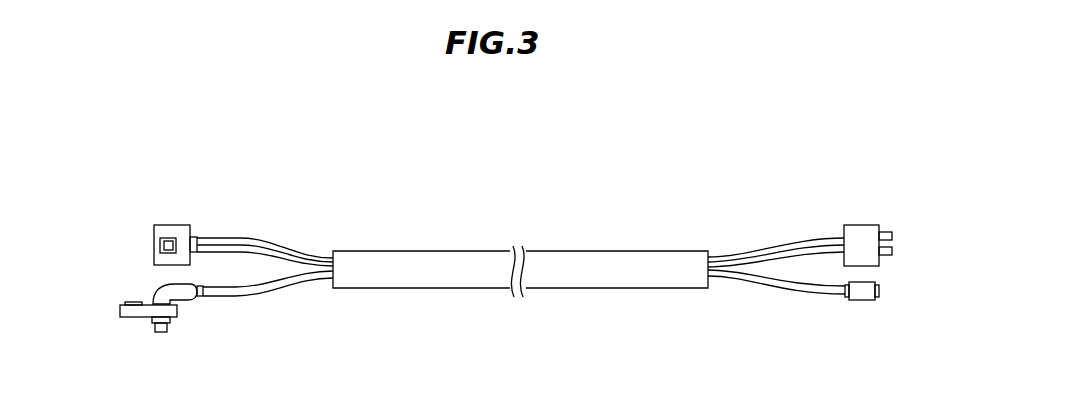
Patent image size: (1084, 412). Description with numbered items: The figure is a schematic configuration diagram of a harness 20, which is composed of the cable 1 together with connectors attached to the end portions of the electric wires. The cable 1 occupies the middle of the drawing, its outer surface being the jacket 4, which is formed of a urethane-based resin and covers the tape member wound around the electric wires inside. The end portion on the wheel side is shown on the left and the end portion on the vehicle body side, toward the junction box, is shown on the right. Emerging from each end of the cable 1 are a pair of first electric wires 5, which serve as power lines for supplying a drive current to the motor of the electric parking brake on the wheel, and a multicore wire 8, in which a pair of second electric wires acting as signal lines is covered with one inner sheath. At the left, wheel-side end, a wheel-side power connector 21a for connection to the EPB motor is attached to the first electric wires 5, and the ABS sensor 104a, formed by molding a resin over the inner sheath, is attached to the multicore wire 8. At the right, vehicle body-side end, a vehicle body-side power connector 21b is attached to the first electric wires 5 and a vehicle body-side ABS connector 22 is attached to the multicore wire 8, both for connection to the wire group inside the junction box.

The harness 20 is at (661, 200).
The cable 1 is at (543, 247).
The jacket 4 is at (637, 283).
The first electric wires 5 is at (232, 245).
The multicore wire 8 is at (278, 284).
The wheel-side power connector 21a is at (153, 252).
The vehicle body-side power connector 21b is at (893, 250).
The vehicle body-side ABS connector 22 is at (880, 290).
The ABS sensor 104a is at (155, 292).